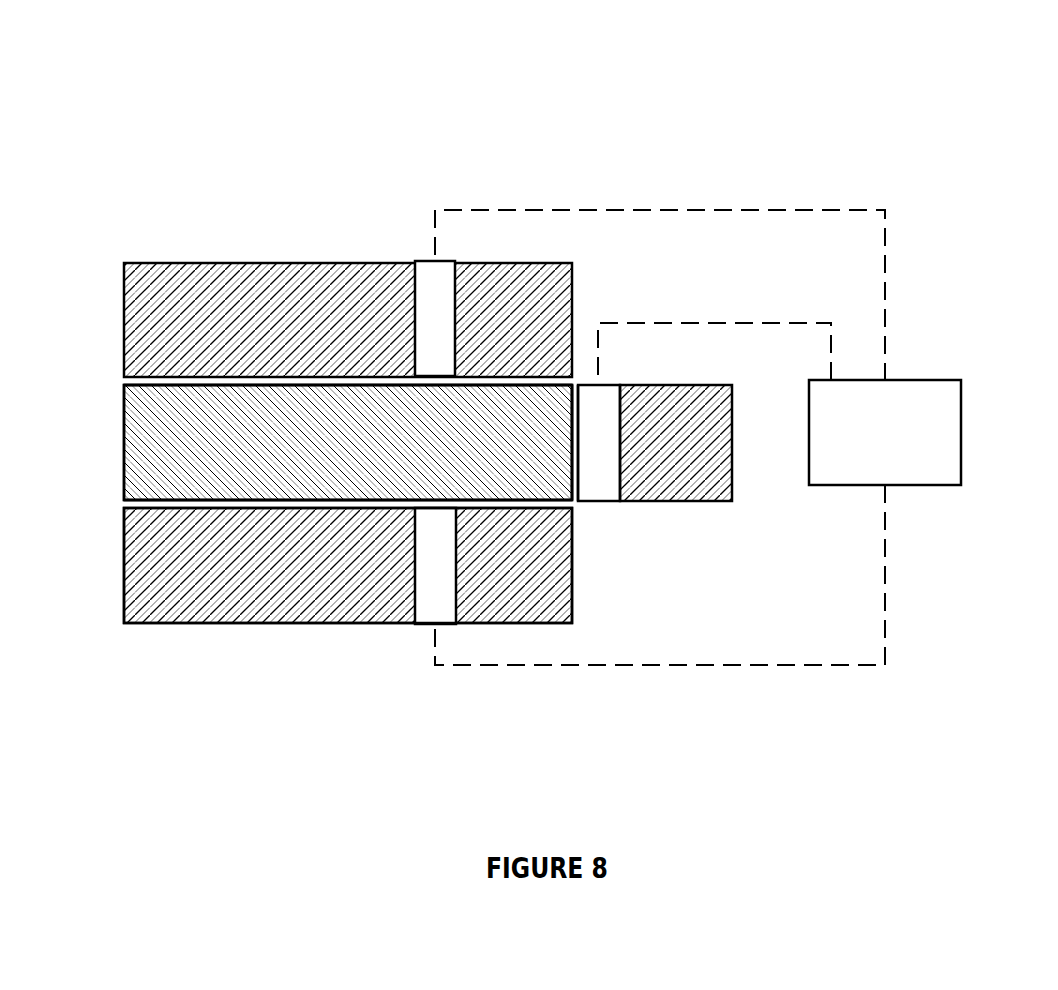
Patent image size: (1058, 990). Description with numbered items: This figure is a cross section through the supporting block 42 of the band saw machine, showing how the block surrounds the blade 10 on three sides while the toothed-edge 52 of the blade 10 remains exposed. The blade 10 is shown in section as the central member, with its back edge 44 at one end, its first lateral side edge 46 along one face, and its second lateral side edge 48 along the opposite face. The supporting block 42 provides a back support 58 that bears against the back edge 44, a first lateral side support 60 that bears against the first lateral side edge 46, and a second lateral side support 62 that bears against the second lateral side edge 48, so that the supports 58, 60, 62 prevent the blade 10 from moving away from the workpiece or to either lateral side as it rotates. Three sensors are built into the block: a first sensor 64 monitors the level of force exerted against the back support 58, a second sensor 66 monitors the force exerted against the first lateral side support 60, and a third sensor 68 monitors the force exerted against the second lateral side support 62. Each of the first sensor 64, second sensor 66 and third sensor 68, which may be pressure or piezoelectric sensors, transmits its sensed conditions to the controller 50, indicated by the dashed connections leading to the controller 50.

The blade 10 is at (227, 447).
The supporting block 42 is at (248, 685).
The back edge 44 is at (573, 398).
The first lateral side edge 46 is at (328, 385).
The second lateral side edge 48 is at (302, 502).
The controller 50 is at (891, 442).
The toothed-edge 52 is at (124, 437).
The back support 58 is at (697, 470).
The first lateral side support 60 is at (375, 285).
The second lateral side support 62 is at (174, 604).
The first sensor 64 is at (607, 425).
The second sensor 66 is at (423, 293).
The third sensor 68 is at (432, 597).